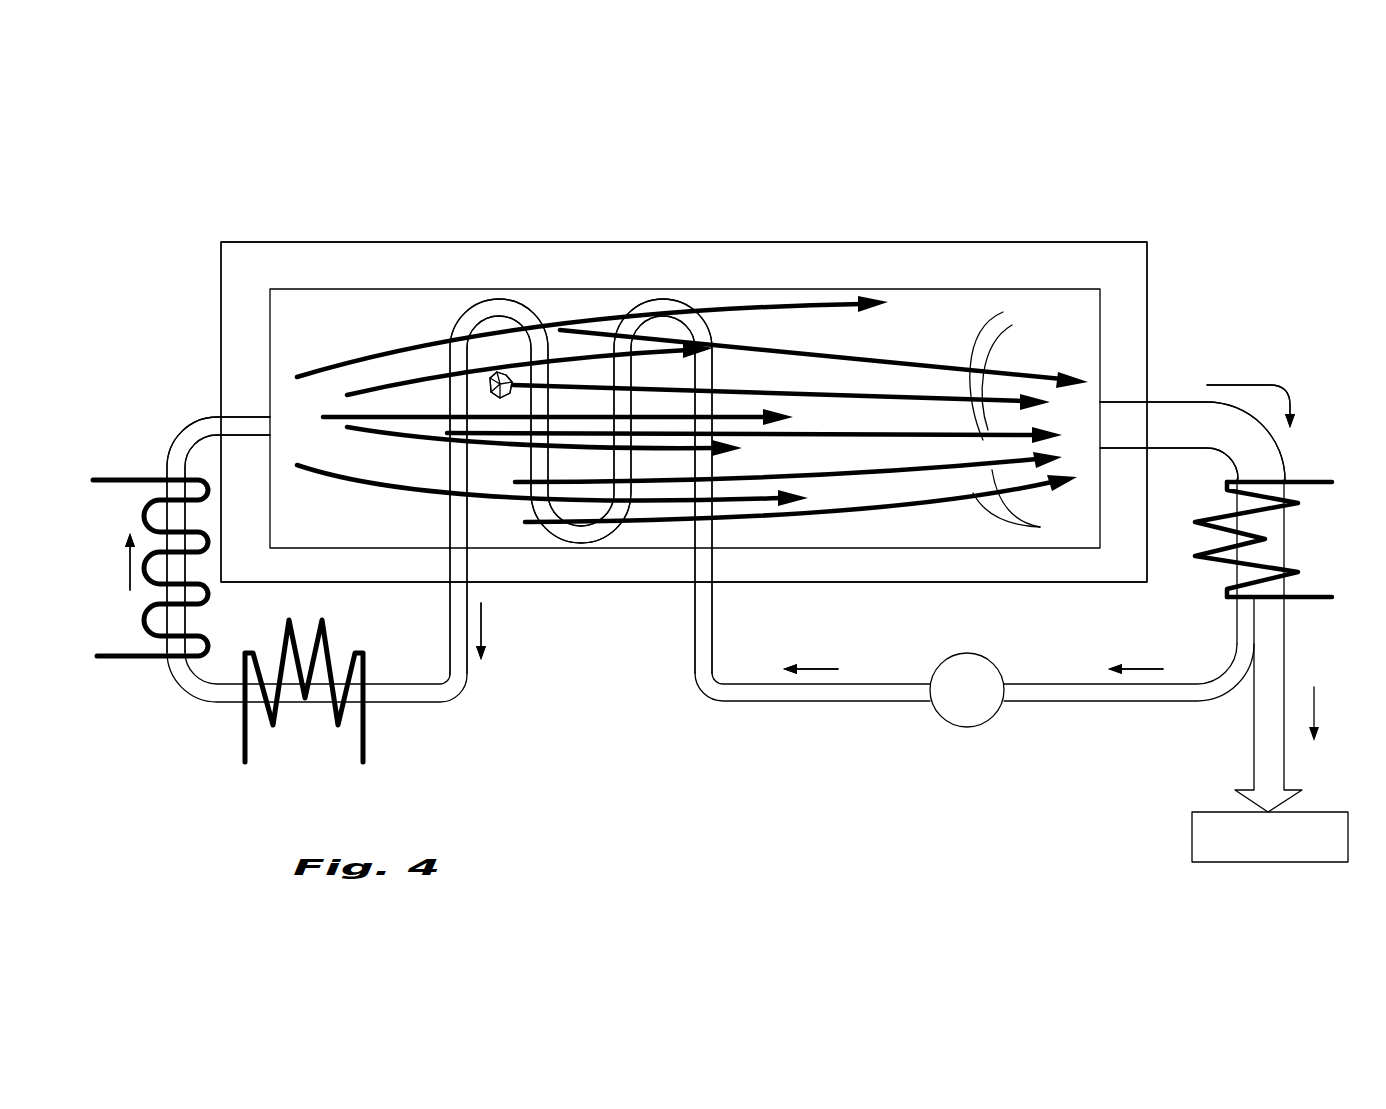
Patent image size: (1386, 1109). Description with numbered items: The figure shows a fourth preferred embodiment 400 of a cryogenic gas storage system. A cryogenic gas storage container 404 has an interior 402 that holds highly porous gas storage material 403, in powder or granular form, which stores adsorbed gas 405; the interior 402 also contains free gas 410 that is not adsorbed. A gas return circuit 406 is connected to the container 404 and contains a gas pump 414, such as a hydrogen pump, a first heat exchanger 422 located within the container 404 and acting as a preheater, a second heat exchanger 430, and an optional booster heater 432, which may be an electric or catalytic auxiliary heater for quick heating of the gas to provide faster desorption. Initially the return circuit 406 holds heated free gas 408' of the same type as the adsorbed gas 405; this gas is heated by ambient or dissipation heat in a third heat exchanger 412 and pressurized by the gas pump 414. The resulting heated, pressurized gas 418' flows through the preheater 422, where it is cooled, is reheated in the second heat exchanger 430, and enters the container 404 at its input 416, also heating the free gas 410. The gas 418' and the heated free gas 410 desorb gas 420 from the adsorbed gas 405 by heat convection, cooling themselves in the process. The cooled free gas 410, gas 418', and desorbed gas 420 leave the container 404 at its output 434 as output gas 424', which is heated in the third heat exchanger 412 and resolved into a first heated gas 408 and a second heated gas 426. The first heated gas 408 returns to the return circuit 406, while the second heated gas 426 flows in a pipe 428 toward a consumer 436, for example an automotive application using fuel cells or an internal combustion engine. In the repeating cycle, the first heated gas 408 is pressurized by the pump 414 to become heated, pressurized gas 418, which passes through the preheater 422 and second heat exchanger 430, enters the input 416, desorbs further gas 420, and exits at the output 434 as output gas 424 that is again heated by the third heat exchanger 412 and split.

The fourth preferred embodiment 400 is at (432, 222).
The interior 402 is at (288, 330).
The highly porous gas storage material 403 is at (496, 368).
The cryogenic gas storage container 404 is at (366, 242).
The adsorbed gas 405 is at (490, 374).
The gas return circuit 406 is at (429, 704).
The first heated gas 408 is at (1092, 643).
The heated free gas 408' is at (1092, 643).
The free gas 410 is at (422, 415).
The third heat exchanger 412 is at (1322, 480).
The gas pump 414 is at (960, 727).
The input 416 is at (270, 418).
The heated, pressurized gas 418 is at (512, 616).
The heated, pressurized gas 418' is at (512, 616).
The desorbed gas 420 is at (1021, 424).
The first heat exchanger (preheater) 422 is at (522, 300).
The output gas 424 is at (1263, 375).
The output gas 424' is at (1263, 375).
The second heated gas 426 is at (1316, 712).
The pipe 428 is at (1254, 765).
The second heat exchanger 430 is at (245, 750).
The booster heater 432 is at (143, 478).
The output 434 is at (1103, 400).
The consumer 436 is at (1192, 826).